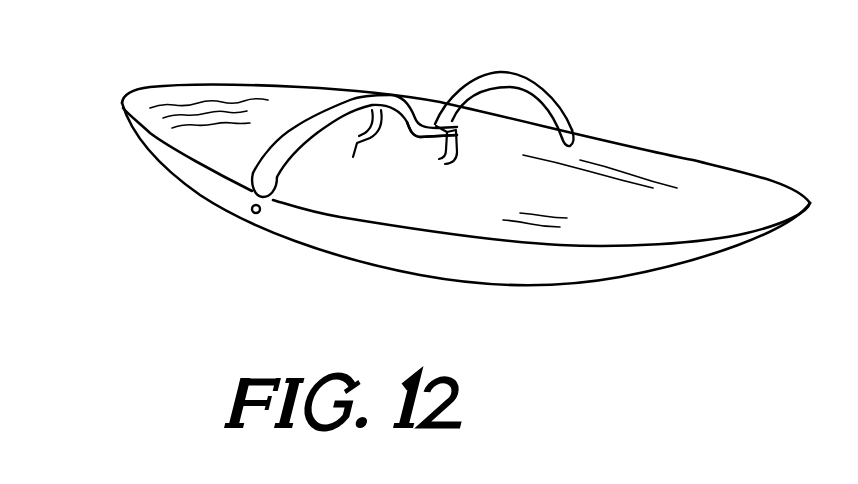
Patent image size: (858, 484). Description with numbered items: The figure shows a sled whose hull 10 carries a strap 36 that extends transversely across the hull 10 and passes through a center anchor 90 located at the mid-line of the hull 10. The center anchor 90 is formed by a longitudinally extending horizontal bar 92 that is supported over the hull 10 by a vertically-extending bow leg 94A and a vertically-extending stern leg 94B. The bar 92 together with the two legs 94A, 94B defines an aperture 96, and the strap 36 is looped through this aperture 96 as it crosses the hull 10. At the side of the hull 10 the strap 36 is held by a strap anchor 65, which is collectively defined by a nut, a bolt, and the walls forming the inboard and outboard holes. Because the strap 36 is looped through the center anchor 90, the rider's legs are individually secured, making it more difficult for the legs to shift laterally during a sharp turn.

The hull 10 is at (713, 256).
The strap 36 is at (505, 70).
The strap anchor 65 is at (256, 221).
The center anchor 90 is at (420, 89).
The horizontal bar 92 is at (458, 132).
The bow leg 94A is at (458, 154).
The stern leg 94B is at (355, 149).
The aperture 96 is at (427, 145).